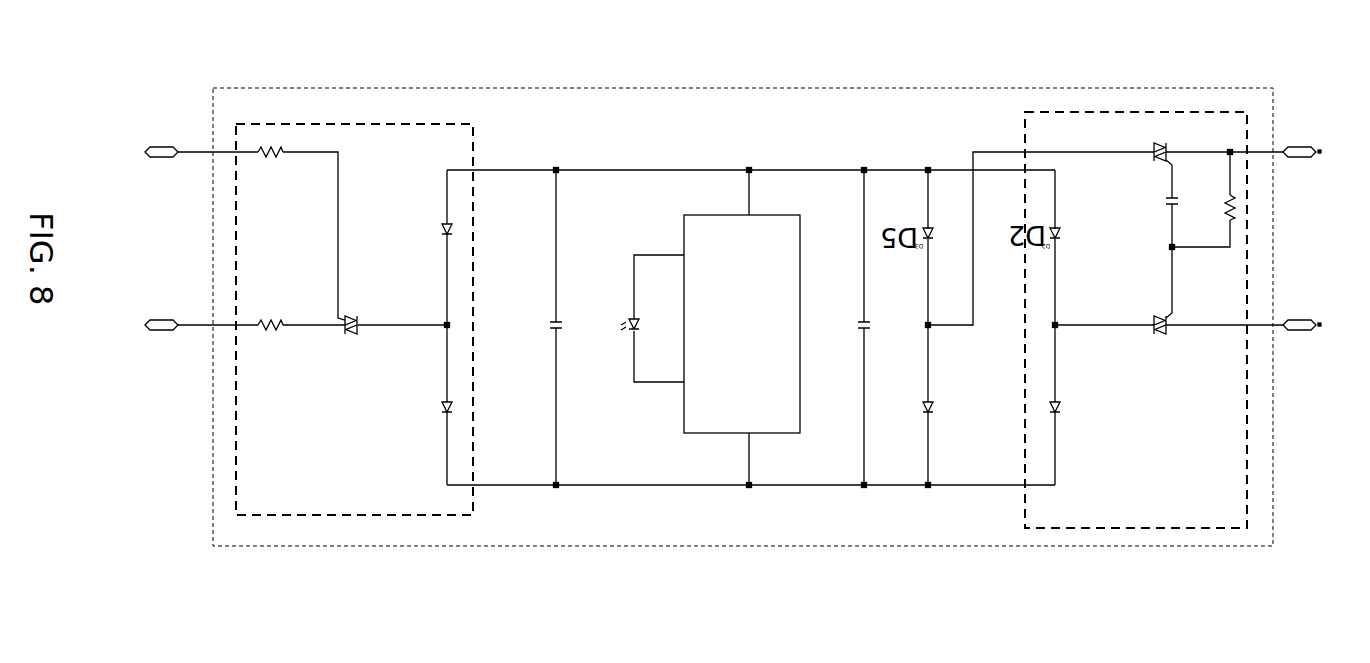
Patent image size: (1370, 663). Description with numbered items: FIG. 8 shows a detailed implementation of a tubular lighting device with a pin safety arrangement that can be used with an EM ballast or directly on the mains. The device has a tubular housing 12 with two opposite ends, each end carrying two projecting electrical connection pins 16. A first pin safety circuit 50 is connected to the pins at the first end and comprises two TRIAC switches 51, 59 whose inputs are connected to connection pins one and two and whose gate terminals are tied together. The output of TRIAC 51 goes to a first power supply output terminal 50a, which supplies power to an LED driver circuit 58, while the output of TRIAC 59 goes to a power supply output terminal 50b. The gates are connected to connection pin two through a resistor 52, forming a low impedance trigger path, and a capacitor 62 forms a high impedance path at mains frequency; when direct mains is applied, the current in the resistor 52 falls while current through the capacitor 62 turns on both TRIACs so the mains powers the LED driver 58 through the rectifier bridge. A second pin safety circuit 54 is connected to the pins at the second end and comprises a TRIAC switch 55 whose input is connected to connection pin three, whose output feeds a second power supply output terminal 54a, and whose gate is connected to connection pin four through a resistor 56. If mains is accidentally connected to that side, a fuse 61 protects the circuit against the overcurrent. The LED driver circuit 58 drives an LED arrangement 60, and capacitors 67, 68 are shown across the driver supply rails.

The tubular housing 12 is at (500, 553).
The electrical connection pins 16 is at (158, 335).
The first pin safety circuit 50 is at (1215, 532).
The first power supply output terminal 50a is at (1063, 340).
The power supply output terminal 50b is at (938, 335).
The TRIAC switch 51 is at (1163, 345).
The resistor 52 is at (1247, 195).
The second pin safety circuit 54 is at (408, 525).
The second power supply output terminal 54a is at (439, 333).
The TRIAC switch 55 is at (343, 357).
The resistor 56 is at (271, 130).
The LED driver circuit 58 is at (765, 445).
The TRIAC switch 59 is at (1145, 130).
The LED arrangement 60 is at (633, 408).
The fuse 61 is at (265, 348).
The capacitor 62 is at (1183, 195).
The capacitor 67 is at (855, 322).
The capacitor 68 is at (537, 322).